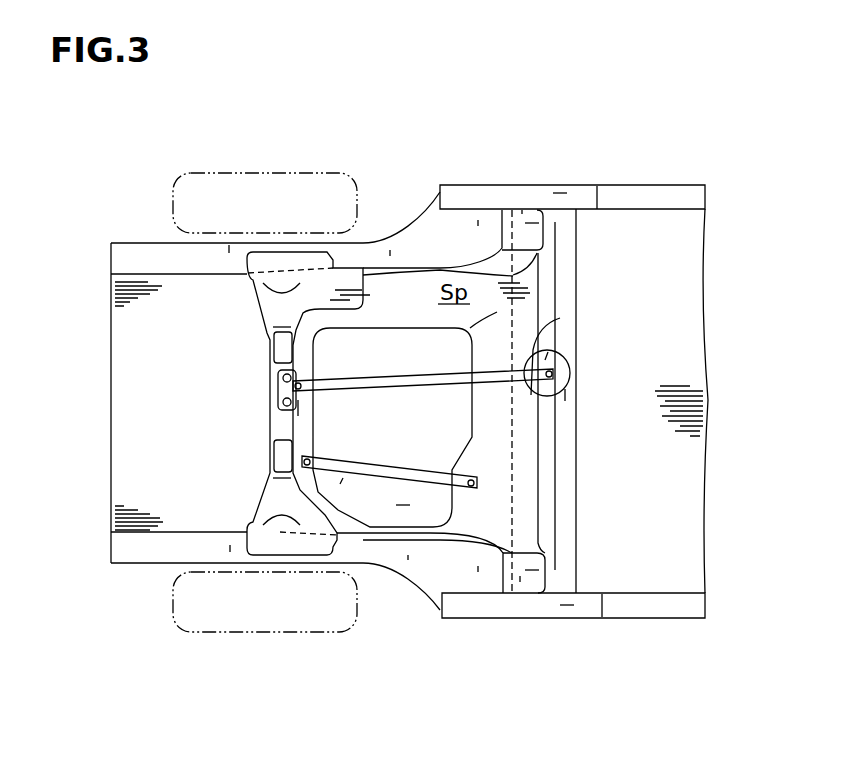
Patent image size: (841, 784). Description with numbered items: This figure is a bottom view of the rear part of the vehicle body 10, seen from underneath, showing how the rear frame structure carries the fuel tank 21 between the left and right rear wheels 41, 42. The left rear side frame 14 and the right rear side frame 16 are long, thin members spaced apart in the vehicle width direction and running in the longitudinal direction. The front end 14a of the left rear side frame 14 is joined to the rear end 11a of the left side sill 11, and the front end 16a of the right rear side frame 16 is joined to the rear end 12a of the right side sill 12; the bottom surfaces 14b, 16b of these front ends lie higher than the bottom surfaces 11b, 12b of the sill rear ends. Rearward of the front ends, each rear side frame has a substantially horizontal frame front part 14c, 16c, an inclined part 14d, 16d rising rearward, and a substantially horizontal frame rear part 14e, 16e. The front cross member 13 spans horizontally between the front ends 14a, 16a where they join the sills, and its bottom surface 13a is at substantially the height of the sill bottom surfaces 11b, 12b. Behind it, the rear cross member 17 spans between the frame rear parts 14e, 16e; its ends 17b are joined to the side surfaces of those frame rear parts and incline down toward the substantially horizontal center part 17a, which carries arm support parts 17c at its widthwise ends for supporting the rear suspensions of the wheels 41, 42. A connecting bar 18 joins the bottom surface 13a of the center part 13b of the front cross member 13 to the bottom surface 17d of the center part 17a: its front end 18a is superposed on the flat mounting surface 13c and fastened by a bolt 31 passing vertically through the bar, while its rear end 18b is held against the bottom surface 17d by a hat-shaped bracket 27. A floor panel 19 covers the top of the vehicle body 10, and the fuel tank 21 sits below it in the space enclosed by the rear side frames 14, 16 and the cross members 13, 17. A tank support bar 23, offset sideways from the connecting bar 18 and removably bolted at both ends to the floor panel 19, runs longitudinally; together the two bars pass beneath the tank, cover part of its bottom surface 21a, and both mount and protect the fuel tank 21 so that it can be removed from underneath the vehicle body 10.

The vehicle body 10 is at (64, 189).
The left side sill 11 is at (686, 622).
The rear end of left side sill 11a is at (602, 605).
The bottom surface of rear end of left side sill 11b is at (567, 605).
The right side sill 12 is at (673, 181).
The rear end of right side sill 12a is at (597, 193).
The bottom surface of rear end of right side sill 12b is at (560, 193).
The front cross member 13 is at (580, 483).
The bottom surface of front cross member 13a is at (567, 395).
The vehicle-widthwise center part of front cross member 13b is at (547, 427).
The mounting surface 13c is at (546, 357).
The left rear side frame 14 is at (592, 700).
The front end of left rear side frame 14a is at (520, 579).
The bottom surface of front end of left rear side frame 14b is at (532, 570).
The frame front part of left rear side frame 14c is at (478, 569).
The inclined part of left rear side frame 14d is at (408, 558).
The frame rear part of left rear side frame 14e is at (230, 547).
The right rear side frame 16 is at (600, 80).
The front end of right rear side frame 16a is at (522, 212).
The bottom surface of front end of right rear side frame 16b is at (532, 223).
The frame front part of right rear side frame 16c is at (478, 224).
The inclined part of right rear side frame 16d is at (390, 254).
The frame rear part of right rear side frame 16e is at (228, 251).
The rear cross member 17 is at (178, 307).
The center part of rear cross member 17a is at (284, 423).
The end of rear cross member 17b is at (281, 305).
The arm support part 17c is at (272, 348).
The bottom surface of center part of rear cross member 17d is at (276, 398).
The connecting bar 18 is at (402, 392).
The front end of connecting bar 18a is at (560, 318).
The rear end of connecting bar 18b is at (318, 380).
The floor panel 19 is at (497, 312).
The fuel tank 21 is at (342, 482).
The bottom surface of fuel tank 21a is at (403, 505).
The tank support bar 23 is at (392, 475).
The bracket 27 is at (299, 408).
The bolt 31 is at (566, 373).
The left rear wheel 41 is at (200, 632).
The right rear wheel 42 is at (225, 233).